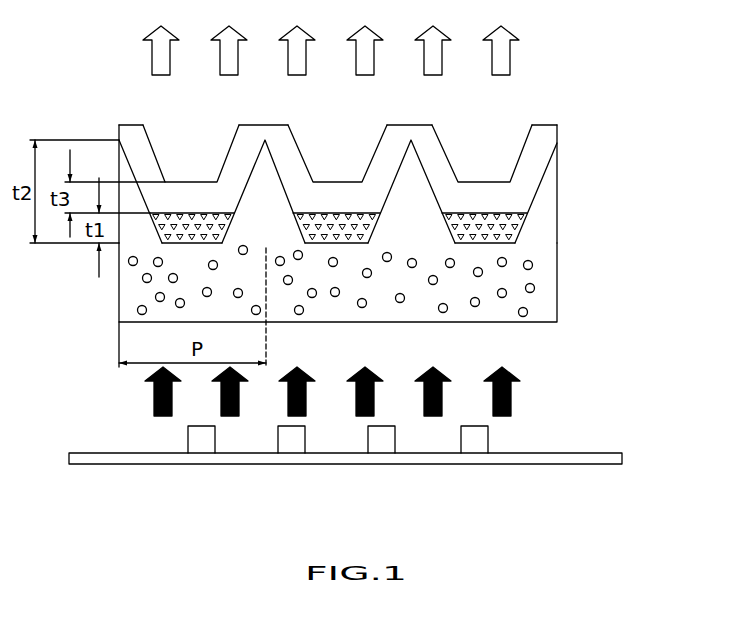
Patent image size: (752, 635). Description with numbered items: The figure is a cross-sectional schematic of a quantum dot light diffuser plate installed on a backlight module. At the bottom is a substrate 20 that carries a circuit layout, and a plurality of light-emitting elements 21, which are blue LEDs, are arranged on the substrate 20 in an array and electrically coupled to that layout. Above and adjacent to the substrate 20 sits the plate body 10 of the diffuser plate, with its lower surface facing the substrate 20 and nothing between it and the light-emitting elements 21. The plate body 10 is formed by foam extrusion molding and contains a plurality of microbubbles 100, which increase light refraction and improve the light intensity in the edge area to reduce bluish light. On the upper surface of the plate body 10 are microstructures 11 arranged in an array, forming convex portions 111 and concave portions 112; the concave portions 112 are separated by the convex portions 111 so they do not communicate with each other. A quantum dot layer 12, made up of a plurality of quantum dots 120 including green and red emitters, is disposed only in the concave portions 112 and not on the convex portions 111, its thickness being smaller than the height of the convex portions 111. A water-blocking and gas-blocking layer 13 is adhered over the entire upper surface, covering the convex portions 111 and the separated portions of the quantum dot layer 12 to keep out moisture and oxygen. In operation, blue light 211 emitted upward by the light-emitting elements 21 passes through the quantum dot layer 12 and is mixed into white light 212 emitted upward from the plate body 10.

The plate body 10 is at (556, 290).
The microbubbles 100 is at (155, 297).
The microstructures 11 is at (550, 212).
The convex portions 111 is at (117, 140).
The concave portions 112 is at (154, 195).
The quantum dot layer 12 is at (523, 178).
The water-blocking and gas-blocking layer 13 is at (547, 133).
The quantum dots 120 is at (198, 218).
The substrate 20 is at (622, 455).
The light-emitting elements 21 is at (195, 433).
The blue light 211 is at (515, 376).
The white light 212 is at (508, 38).